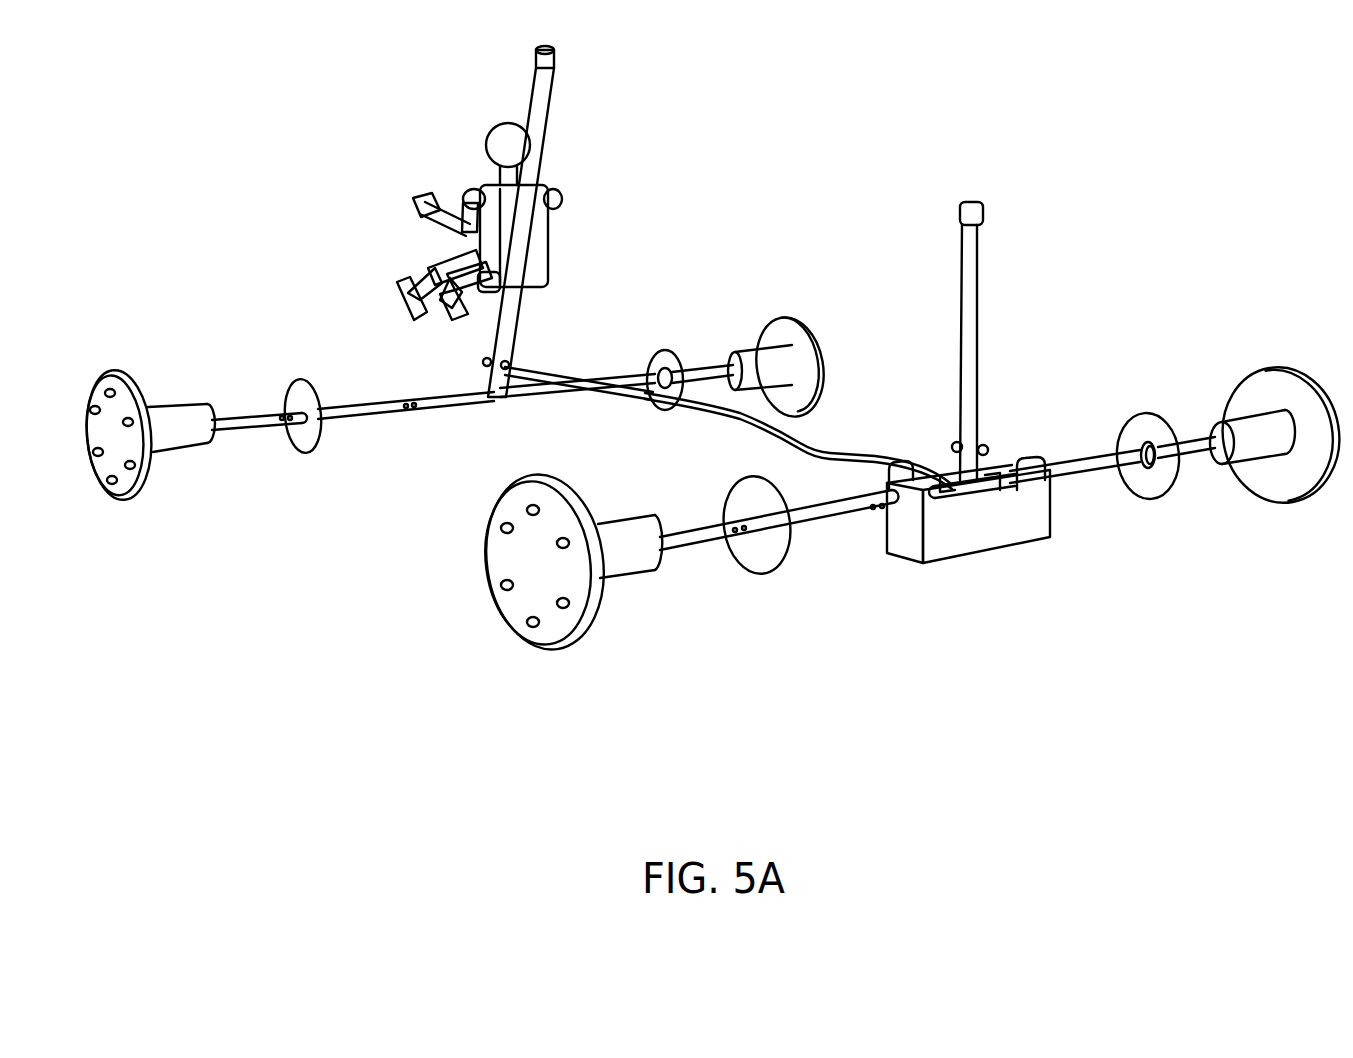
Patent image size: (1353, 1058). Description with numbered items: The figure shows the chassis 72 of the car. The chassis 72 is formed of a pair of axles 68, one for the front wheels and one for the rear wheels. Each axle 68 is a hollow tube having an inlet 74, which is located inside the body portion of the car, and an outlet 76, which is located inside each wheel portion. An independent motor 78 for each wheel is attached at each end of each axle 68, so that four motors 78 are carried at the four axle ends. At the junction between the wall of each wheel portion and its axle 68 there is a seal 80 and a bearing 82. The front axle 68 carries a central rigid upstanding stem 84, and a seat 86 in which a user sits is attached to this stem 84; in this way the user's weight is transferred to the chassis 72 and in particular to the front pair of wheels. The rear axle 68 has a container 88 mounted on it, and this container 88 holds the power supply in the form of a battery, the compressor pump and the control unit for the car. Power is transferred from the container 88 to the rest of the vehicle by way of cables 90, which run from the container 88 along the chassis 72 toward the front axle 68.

The axle 68 is at (368, 405).
The chassis 72 is at (328, 682).
The inlet 74 is at (880, 515).
The outlet 76 is at (736, 548).
The motor 78 is at (188, 440).
The seal 80 is at (1148, 467).
The bearing 82 is at (1156, 440).
The stem 84 is at (548, 100).
The seat 86 is at (548, 240).
The container 88 is at (982, 540).
The cables 90 is at (884, 434).